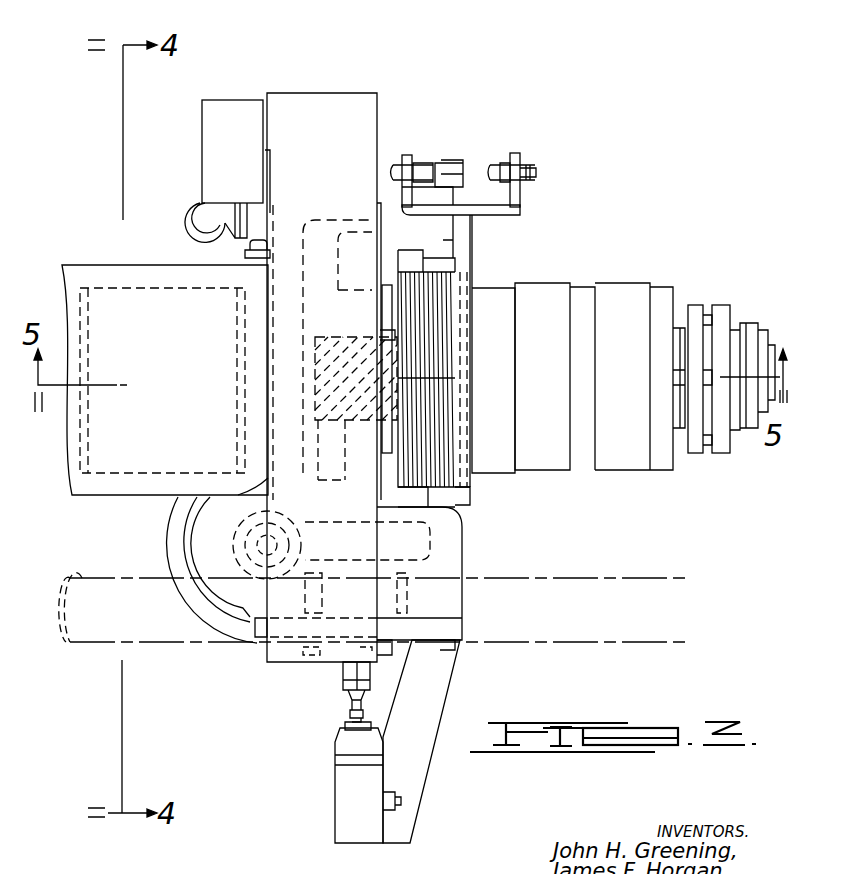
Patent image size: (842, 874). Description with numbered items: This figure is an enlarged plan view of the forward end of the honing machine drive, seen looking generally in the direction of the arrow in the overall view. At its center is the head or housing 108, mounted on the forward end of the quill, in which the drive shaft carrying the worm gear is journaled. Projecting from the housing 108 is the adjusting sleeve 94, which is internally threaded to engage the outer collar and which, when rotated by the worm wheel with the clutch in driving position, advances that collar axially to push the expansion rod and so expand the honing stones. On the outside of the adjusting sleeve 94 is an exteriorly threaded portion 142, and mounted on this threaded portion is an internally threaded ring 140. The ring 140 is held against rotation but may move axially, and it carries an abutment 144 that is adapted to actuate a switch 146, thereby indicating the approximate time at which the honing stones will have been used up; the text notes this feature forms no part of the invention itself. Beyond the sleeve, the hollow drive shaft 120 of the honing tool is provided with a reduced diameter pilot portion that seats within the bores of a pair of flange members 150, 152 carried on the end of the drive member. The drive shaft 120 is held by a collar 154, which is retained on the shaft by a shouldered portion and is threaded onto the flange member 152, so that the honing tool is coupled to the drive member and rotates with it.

The adjusting sleeve 94 is at (558, 339).
The head or housing 108 is at (340, 197).
The hollow drive shaft 120 is at (765, 345).
The ring 140 is at (468, 312).
The exteriorly threaded portion 142 is at (445, 293).
The abutment 144 is at (512, 168).
The switch 146 is at (443, 168).
The flange member 150 is at (690, 305).
The flange member 152 is at (717, 305).
The collar 154 is at (750, 422).